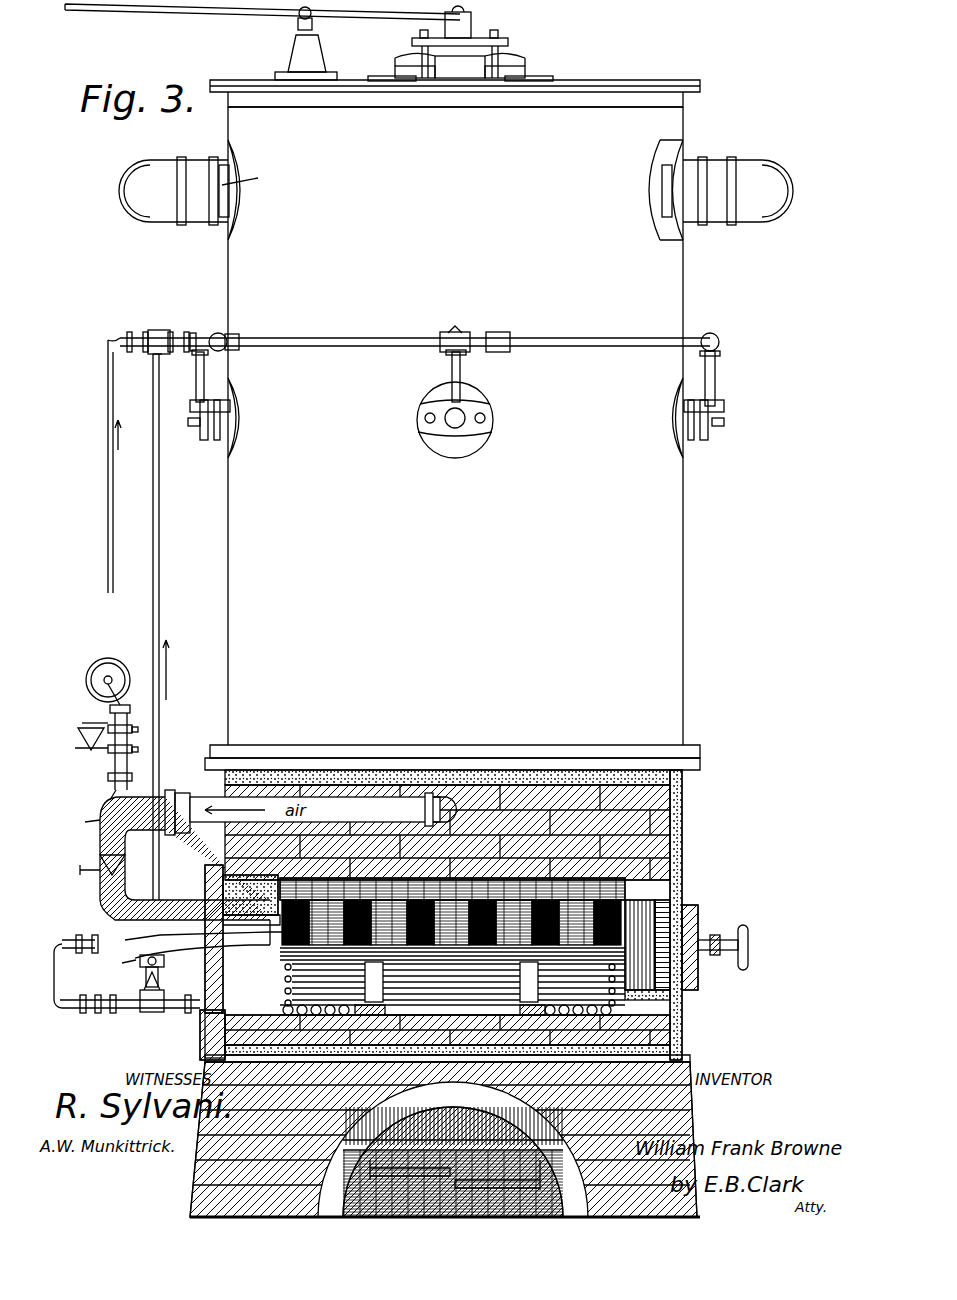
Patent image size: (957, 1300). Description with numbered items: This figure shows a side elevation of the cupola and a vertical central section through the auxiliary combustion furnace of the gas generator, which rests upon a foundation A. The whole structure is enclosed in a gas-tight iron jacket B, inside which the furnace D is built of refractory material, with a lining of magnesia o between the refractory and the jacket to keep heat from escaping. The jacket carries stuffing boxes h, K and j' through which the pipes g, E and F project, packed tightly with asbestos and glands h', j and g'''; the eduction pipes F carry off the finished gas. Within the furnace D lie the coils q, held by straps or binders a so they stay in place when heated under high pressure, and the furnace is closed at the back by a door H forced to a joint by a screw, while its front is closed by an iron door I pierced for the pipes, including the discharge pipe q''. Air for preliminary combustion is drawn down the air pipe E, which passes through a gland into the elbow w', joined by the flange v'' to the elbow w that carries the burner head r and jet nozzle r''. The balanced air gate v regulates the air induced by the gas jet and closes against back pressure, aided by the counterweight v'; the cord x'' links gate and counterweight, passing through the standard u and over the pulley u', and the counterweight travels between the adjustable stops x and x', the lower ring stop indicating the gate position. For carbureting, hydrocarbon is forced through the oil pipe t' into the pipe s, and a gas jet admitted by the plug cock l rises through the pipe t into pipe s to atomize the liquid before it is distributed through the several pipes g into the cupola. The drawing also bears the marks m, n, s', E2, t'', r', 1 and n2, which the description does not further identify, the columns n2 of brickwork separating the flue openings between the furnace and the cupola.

The lever bar m is at (262, 22).
The fulcrum standard n is at (301, 43).
The air pipe E is at (465, 22).
The gland j is at (483, 50).
The stuffing box j' is at (462, 62).
The plug cock l is at (395, 58).
The iron jacket B is at (683, 553).
The stuffing box K is at (215, 160).
The eduction pipe F is at (160, 222).
The gland g''' is at (470, 210).
The distributing pipe s is at (409, 333).
The pipe coupling s' is at (350, 329).
The carbureting pipe g is at (457, 366).
The stuffing box h is at (445, 421).
The gland h' is at (456, 412).
The oil pipe t' is at (109, 472).
The gas pipe t is at (163, 609).
The pulley u' is at (108, 664).
The standard u is at (116, 747).
The upper guide stop x' is at (81, 715).
The counterweight v' is at (78, 740).
The lower guide stop x is at (81, 761).
The cord x'' is at (92, 795).
The air inlet flange E2 is at (178, 795).
The elbow w is at (165, 858).
The elbow w' is at (75, 823).
The balanced air gate v is at (100, 856).
The flange v'' is at (72, 877).
The gas pipe end t'' is at (188, 850).
The jet nozzle r'' is at (197, 914).
The burner tube r' is at (202, 932).
The burner head r is at (277, 938).
The discharge pipe q'' is at (127, 985).
The valve 1 is at (122, 963).
The magnesia lining o is at (682, 800).
The auxiliary combustion furnace D is at (640, 885).
The iron door I is at (205, 875).
The brick pillars n2 is at (452, 901).
The straps or binders a is at (452, 977).
The coil q is at (452, 1008).
The door H is at (700, 985).
The foundation A is at (443, 1139).